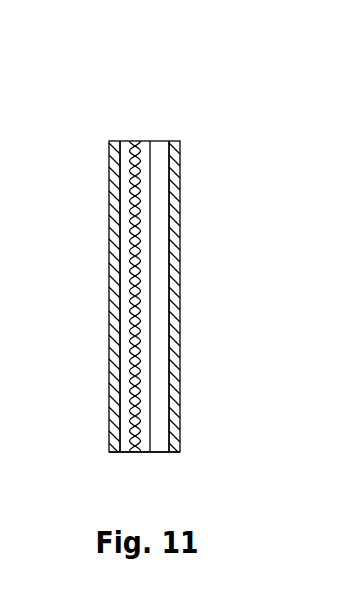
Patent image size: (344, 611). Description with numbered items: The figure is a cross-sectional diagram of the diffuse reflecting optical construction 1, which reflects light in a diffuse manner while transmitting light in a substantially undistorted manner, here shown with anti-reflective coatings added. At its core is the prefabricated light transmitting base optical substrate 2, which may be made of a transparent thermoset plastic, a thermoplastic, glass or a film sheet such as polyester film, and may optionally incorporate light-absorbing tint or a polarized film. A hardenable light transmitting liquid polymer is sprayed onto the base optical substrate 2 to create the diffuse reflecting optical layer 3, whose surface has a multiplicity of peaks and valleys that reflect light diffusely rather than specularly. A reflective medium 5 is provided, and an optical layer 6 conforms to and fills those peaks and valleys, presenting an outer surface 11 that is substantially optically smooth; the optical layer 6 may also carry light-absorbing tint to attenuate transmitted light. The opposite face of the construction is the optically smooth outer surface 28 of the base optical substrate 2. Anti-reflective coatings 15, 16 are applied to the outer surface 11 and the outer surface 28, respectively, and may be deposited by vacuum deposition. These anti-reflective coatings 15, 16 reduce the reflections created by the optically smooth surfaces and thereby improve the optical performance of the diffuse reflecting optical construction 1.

The diffuse reflecting optical construction 1 is at (81, 95).
The base optical substrate 2 is at (158, 147).
The diffuse reflecting optical layer 3 is at (149, 146).
The reflective medium 5 is at (137, 144).
The optical layer 6 is at (123, 146).
The outer surface 11 is at (121, 443).
The anti-reflective coating 15 is at (112, 233).
The anti-reflective coating 16 is at (178, 247).
The outer surface 28 is at (167, 442).